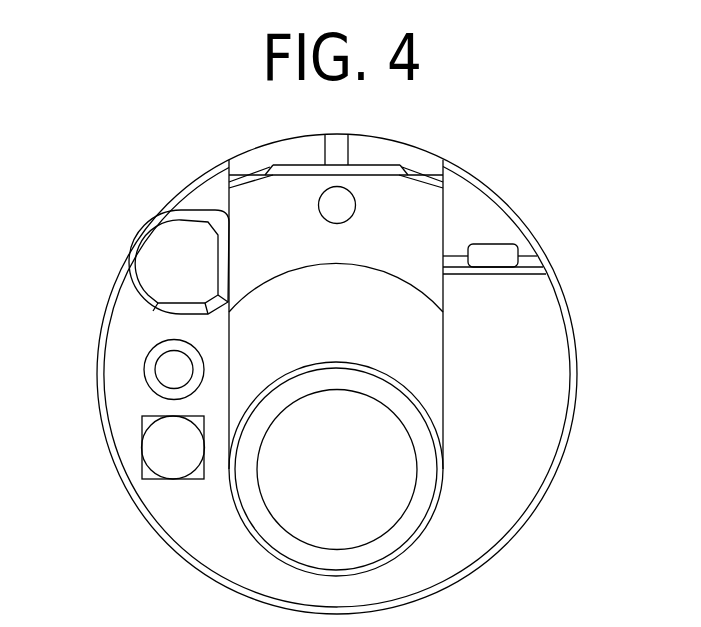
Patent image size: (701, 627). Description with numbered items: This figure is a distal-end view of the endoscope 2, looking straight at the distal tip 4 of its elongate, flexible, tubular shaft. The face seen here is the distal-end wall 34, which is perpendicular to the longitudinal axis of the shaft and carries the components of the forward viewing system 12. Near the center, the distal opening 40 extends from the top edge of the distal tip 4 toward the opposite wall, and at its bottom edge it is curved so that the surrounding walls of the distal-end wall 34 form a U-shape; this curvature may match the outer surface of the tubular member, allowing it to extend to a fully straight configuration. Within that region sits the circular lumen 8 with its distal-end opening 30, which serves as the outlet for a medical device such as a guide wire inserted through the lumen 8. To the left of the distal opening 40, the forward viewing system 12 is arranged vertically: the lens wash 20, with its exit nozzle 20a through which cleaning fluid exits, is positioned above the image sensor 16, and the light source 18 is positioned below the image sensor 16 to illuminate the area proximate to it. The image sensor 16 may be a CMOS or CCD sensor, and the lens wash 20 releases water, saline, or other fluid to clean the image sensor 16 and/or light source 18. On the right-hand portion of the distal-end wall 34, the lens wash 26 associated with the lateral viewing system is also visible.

The endoscope 2 is at (586, 227).
The distal tip 4 is at (566, 445).
The lumen 8 is at (345, 448).
The forward viewing system 12 is at (68, 282).
The image sensor 16 is at (167, 366).
The light source 18 is at (163, 448).
The lens wash 20 is at (167, 252).
The exit nozzle 20a is at (178, 312).
The lens wash 26 is at (478, 218).
The distal-end opening 30 is at (350, 509).
The distal-end wall 34 is at (520, 391).
The distal opening 40 is at (350, 326).